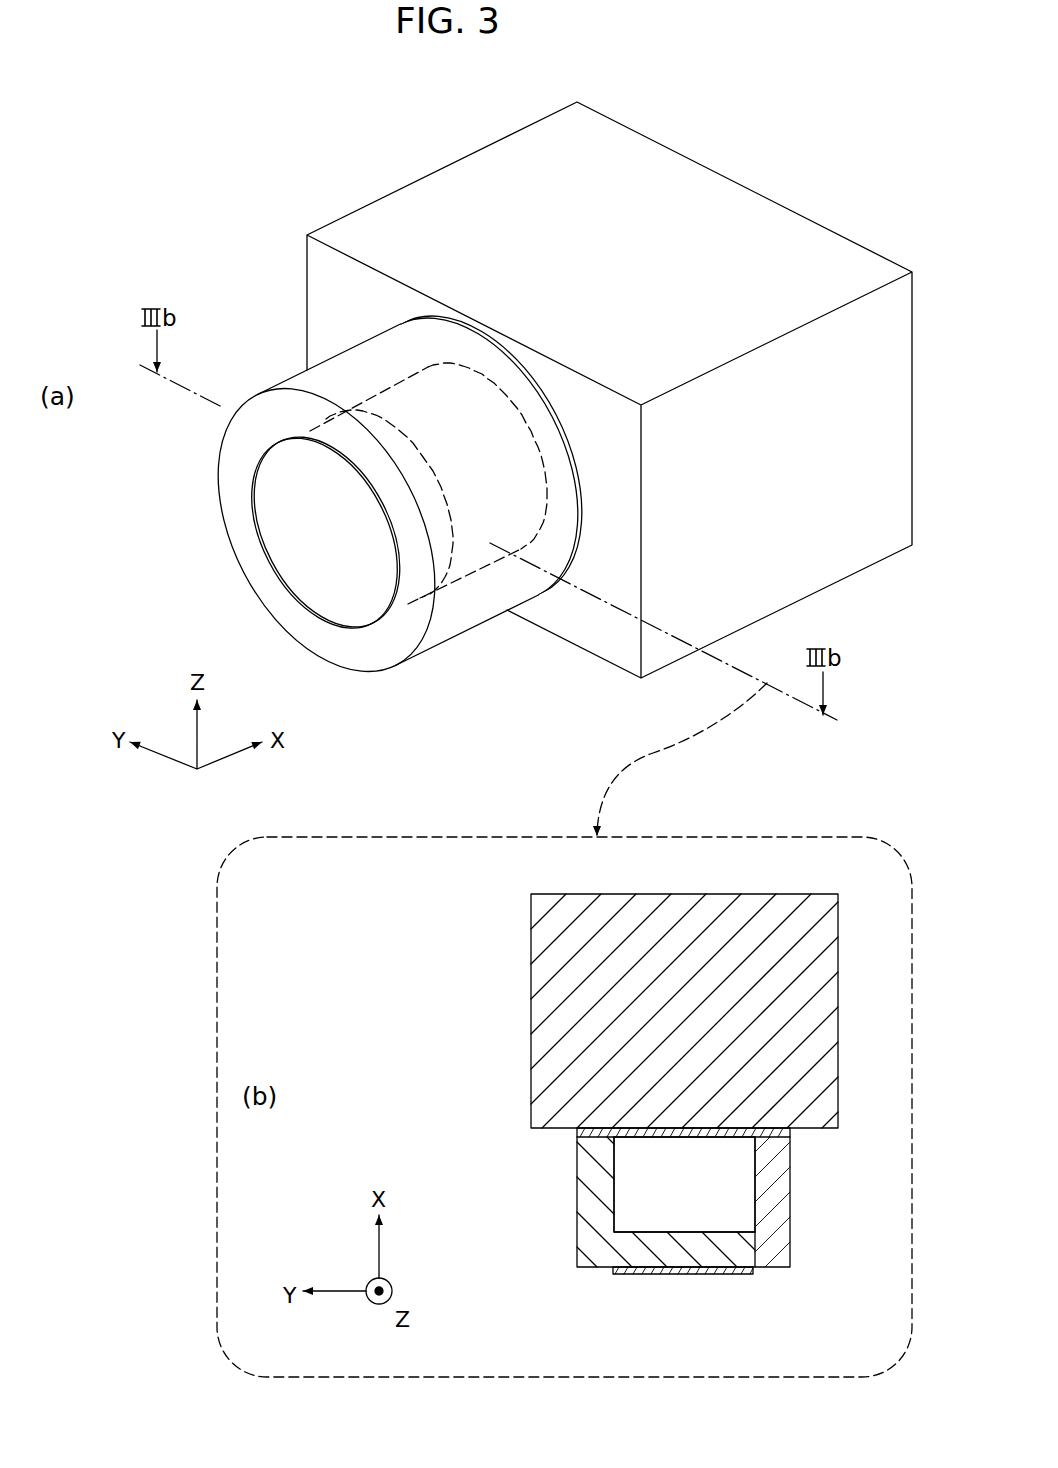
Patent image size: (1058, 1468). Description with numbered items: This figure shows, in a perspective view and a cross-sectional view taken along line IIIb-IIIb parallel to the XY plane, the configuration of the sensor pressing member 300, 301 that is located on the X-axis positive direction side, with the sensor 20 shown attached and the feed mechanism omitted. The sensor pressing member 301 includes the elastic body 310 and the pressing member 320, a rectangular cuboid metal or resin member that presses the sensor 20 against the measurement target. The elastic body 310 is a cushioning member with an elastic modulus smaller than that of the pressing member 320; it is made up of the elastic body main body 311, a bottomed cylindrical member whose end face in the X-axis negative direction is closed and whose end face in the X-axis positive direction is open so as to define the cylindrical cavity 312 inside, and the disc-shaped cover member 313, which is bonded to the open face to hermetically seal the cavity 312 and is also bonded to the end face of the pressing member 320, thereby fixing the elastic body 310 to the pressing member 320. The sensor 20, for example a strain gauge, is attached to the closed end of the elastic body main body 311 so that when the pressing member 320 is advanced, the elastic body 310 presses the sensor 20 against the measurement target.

The sensor 20 is at (282, 552).
The sensor pressing member 300 is at (476, 967).
The sensor pressing member 301 is at (277, 125).
The elastic body 310 is at (343, 353).
The elastic body main body 311 is at (483, 607).
The cavity 312 is at (467, 583).
The cover member 313 is at (517, 360).
The pressing member 320 is at (457, 160).